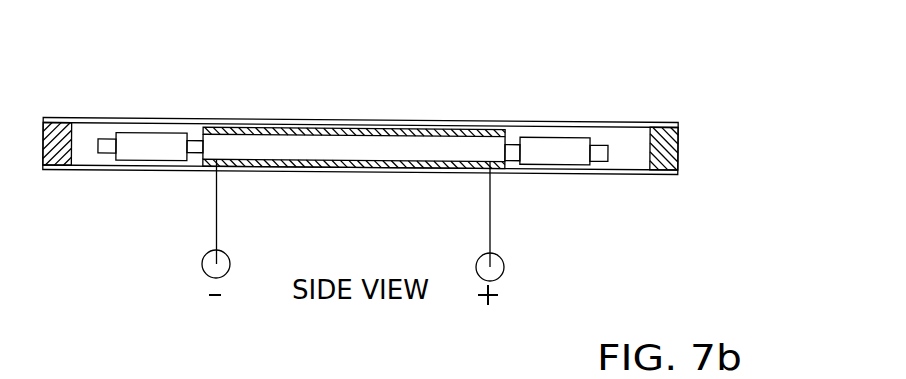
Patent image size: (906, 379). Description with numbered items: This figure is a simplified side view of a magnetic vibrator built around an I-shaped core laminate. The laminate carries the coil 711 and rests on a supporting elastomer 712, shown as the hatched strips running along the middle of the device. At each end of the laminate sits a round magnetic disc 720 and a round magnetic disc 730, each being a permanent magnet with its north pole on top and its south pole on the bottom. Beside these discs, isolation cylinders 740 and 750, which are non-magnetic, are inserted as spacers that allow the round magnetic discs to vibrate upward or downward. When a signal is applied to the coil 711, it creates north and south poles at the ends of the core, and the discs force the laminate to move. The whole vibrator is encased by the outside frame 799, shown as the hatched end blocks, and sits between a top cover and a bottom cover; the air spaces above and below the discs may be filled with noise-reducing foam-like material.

The coil 711 is at (259, 147).
The supporting elastomer 712 is at (453, 131).
The round magnetic disc 720 is at (145, 138).
The round magnetic disc 730 is at (533, 146).
The isolation cylinder 740 is at (112, 150).
The isolation cylinder 750 is at (592, 143).
The outside frame 799 is at (62, 128).